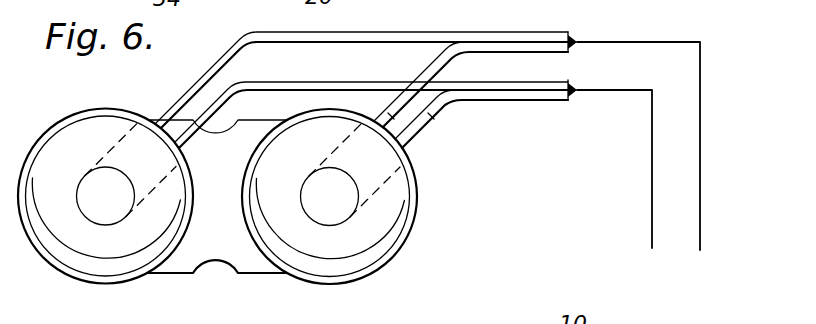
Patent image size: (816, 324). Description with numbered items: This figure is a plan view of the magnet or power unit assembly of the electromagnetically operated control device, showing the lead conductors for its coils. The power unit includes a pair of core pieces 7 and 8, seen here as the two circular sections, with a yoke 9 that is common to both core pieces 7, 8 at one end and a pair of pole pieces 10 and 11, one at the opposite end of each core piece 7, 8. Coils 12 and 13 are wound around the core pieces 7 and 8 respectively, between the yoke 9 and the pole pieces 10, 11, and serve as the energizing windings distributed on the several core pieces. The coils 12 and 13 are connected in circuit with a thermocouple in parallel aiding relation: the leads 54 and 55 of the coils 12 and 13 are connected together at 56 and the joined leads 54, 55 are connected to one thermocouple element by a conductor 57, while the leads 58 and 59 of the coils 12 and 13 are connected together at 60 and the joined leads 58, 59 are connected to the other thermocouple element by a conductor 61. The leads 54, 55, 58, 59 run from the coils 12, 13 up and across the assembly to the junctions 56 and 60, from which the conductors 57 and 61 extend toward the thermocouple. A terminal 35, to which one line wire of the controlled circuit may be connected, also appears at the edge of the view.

The core piece 7 is at (352, 226).
The core piece 8 is at (129, 222).
The yoke 9 is at (247, 263).
The pole piece 10 is at (346, 262).
The pole piece 11 is at (122, 263).
The coil 12 is at (410, 222).
The coil 13 is at (63, 270).
The terminal 35 is at (278, 11).
The lead 54 is at (393, 118).
The lead 55 is at (381, 38).
The junction of leads 56 is at (515, 41).
The conductor 57 is at (700, 162).
The lead 58 is at (432, 116).
The lead 59 is at (285, 82).
The junction of leads 60 is at (528, 92).
The conductor 61 is at (648, 192).